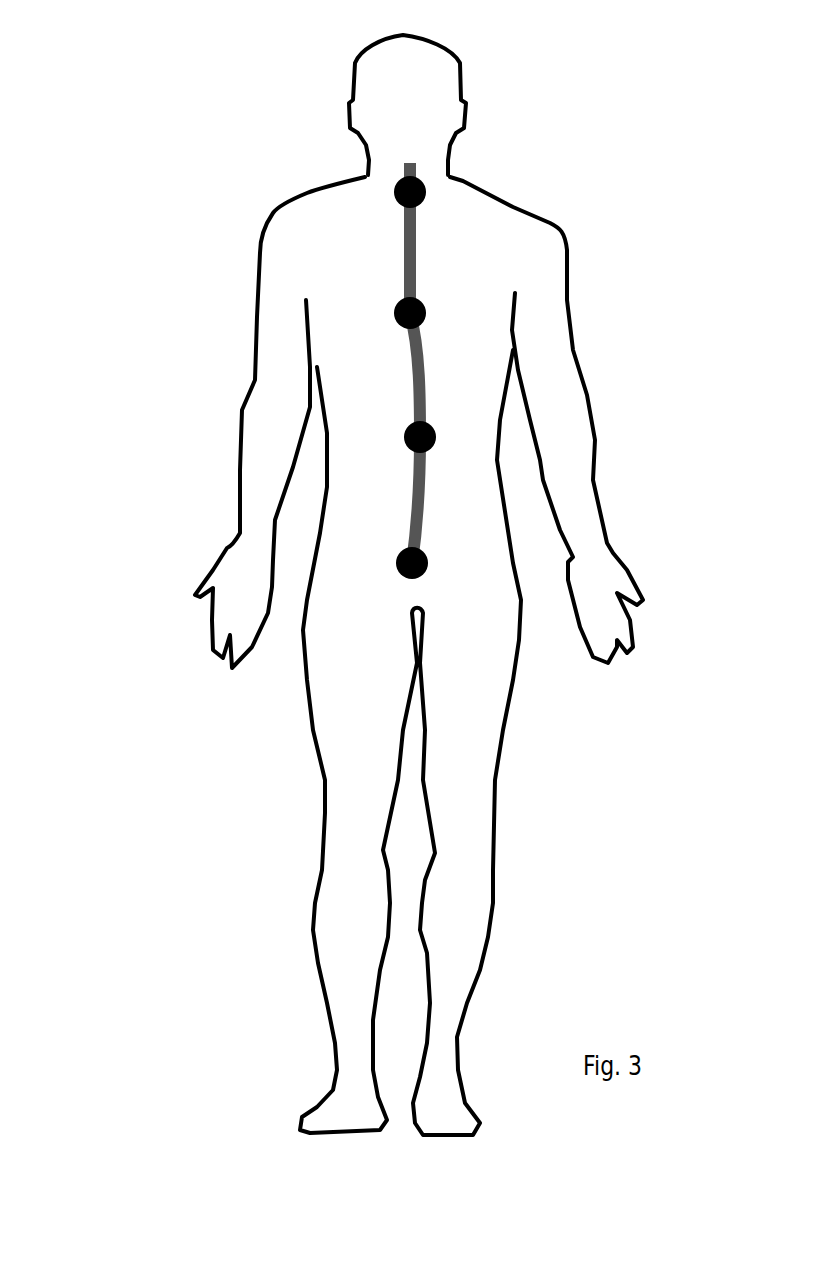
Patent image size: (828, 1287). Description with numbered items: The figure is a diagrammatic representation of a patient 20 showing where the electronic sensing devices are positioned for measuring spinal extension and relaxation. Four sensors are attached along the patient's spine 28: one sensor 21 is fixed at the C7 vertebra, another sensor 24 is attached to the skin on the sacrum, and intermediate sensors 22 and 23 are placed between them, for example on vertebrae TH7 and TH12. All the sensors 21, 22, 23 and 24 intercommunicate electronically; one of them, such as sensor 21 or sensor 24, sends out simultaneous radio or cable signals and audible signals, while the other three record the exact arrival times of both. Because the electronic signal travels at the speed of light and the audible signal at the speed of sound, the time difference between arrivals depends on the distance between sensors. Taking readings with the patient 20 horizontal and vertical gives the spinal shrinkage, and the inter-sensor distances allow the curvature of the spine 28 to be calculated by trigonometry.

The patient 20 is at (221, 235).
The sensor 21 is at (376, 182).
The intermediate sensor 22 is at (375, 311).
The intermediate sensor 23 is at (456, 432).
The sensor 24 is at (375, 561).
The spine 28 is at (423, 252).